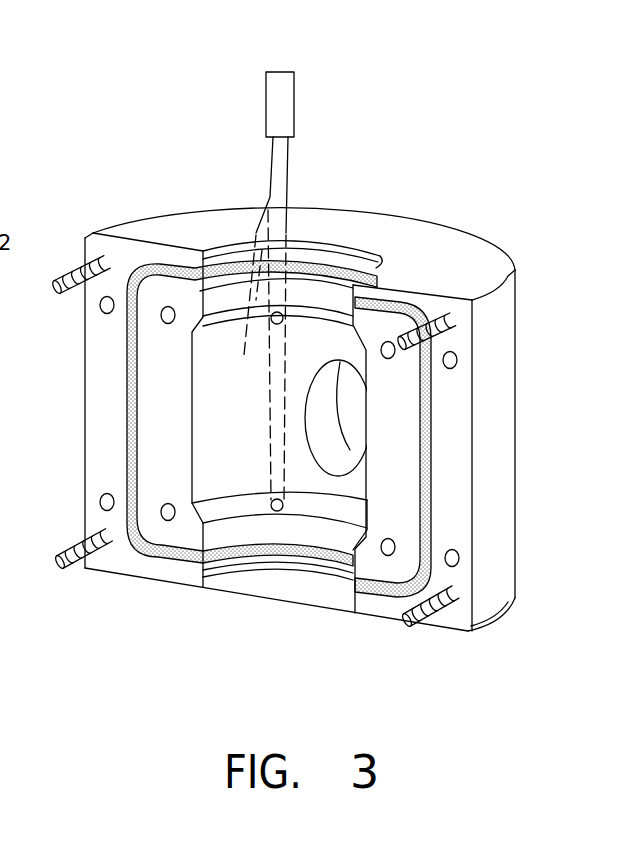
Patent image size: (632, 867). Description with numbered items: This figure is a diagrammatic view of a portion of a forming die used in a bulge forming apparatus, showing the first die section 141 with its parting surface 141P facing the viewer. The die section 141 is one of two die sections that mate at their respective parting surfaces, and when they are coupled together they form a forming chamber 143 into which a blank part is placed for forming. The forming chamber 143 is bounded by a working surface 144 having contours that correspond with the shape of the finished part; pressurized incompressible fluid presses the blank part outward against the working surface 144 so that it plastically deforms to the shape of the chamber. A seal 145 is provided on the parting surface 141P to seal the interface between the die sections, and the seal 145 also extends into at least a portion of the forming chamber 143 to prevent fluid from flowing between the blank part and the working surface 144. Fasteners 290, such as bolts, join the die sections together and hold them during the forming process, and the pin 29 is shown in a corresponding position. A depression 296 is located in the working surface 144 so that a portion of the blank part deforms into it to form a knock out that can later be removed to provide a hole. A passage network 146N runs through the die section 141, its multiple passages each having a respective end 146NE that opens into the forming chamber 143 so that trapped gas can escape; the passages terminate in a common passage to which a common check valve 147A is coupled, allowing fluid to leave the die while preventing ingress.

The first die section 141 is at (387, 214).
The parting surface 141P is at (454, 470).
The forming chamber 143 is at (222, 353).
The working surface 144 is at (232, 476).
The seal 145 is at (177, 557).
The passage network 146N is at (256, 422).
The passage end 146NE is at (277, 324).
The check valve 147A is at (283, 72).
The fastener 290 is at (71, 270).
The pin 29 is at (458, 318).
The depression 296 is at (349, 403).